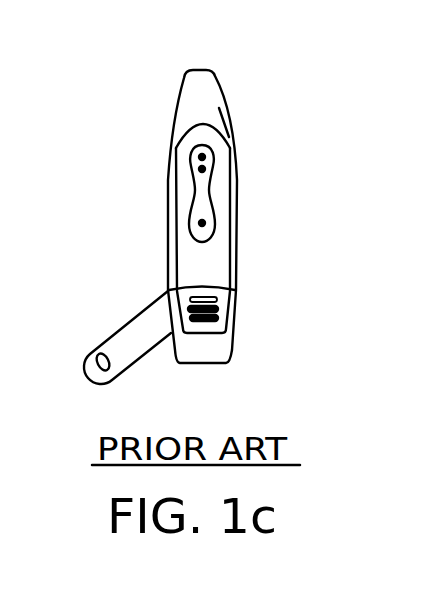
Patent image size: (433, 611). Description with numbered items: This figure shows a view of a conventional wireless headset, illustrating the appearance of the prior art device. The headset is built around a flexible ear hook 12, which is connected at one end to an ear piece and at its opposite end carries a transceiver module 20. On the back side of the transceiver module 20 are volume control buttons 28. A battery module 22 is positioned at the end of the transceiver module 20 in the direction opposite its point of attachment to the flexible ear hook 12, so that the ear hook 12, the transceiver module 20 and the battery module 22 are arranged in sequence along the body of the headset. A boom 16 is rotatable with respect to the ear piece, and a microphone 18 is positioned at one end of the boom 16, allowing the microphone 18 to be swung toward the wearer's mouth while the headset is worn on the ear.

The flexible ear hook 12 is at (209, 93).
The boom 16 is at (133, 323).
The microphone 18 is at (85, 370).
The transceiver module 20 is at (223, 198).
The battery module 22 is at (217, 300).
The volume control buttons 28 is at (206, 223).